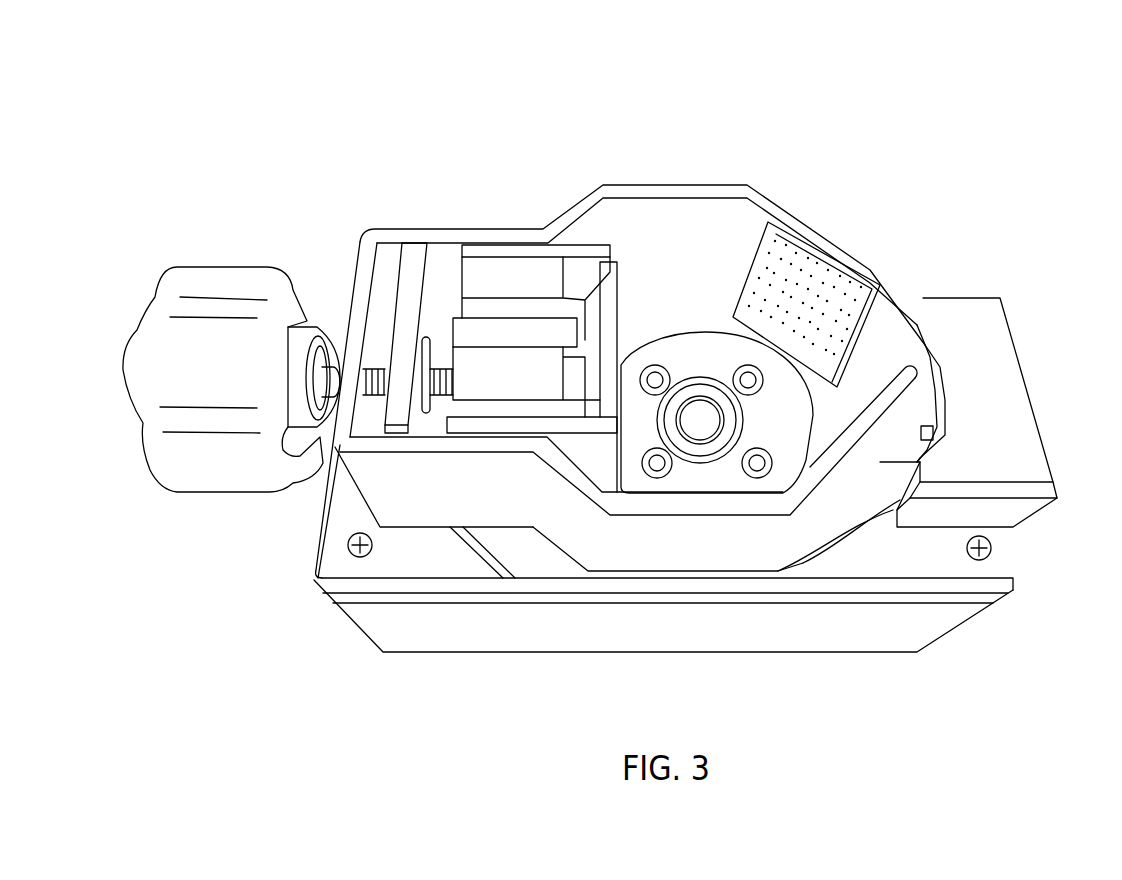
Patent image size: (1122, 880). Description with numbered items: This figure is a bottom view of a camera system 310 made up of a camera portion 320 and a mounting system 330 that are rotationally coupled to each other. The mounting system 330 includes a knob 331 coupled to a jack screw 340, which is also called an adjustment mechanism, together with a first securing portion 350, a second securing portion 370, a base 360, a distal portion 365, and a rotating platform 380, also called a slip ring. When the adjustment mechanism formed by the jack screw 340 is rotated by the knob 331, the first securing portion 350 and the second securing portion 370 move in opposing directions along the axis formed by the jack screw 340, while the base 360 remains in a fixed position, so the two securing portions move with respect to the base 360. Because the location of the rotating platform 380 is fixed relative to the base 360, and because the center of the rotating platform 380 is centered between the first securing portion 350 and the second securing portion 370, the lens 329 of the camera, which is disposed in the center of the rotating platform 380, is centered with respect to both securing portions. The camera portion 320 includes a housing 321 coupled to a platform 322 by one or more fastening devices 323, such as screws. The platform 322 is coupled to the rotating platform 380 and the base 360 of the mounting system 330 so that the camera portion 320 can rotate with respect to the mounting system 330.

The camera system 310 is at (937, 55).
The camera portion 320 is at (909, 672).
The housing 321 is at (418, 627).
The platform 322 is at (407, 550).
The fastening devices 323 is at (360, 553).
The lens 329 is at (700, 427).
The mounting system 330 is at (1033, 316).
The knob 331 is at (200, 497).
The jack screw 340 is at (336, 298).
The first securing portion 350 is at (490, 250).
The base 360 is at (418, 250).
The distal portion 365 is at (1043, 522).
The second securing portion 370 is at (682, 183).
The rotating platform 380 is at (718, 346).